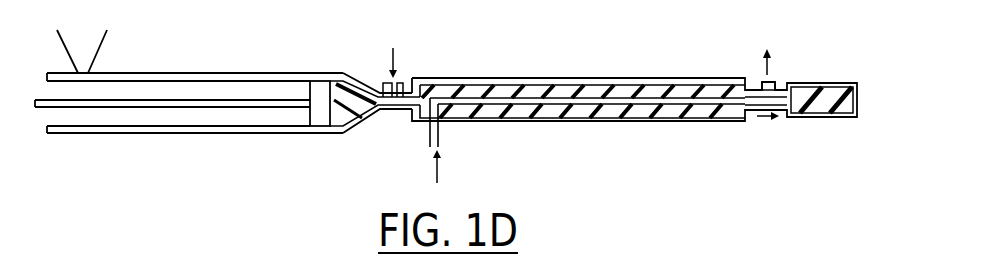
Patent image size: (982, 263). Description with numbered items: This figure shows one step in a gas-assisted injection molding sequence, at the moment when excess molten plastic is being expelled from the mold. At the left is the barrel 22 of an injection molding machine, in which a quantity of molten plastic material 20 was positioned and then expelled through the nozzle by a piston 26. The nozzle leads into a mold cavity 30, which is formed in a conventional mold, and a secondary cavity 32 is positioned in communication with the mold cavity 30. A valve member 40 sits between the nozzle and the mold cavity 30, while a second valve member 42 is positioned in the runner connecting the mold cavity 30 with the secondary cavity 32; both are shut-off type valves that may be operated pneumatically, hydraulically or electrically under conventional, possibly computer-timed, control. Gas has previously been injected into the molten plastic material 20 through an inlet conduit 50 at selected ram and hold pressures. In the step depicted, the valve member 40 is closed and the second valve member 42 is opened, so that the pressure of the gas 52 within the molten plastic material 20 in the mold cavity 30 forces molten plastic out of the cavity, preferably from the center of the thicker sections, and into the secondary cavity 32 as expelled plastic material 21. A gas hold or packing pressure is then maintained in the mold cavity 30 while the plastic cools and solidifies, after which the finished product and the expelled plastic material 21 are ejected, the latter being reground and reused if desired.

The molten plastic material 20 is at (608, 87).
The expelled plastic material 21 is at (853, 112).
The barrel 22 is at (222, 133).
The piston 26 is at (318, 78).
The mold cavity 30 is at (708, 78).
The secondary cavity 32 is at (853, 107).
The valve member 40 is at (380, 123).
The second valve member 42 is at (755, 80).
The inlet conduit 50 is at (431, 140).
The gas 52 is at (647, 88).